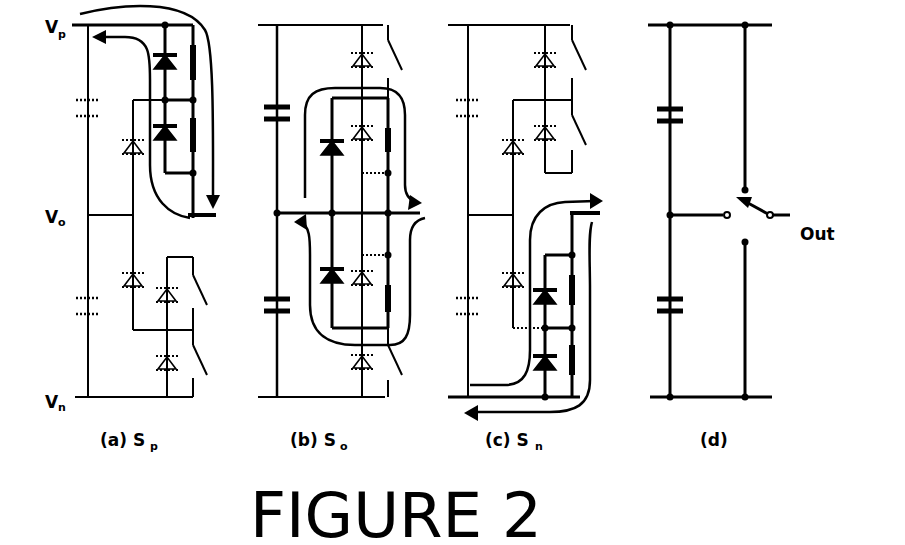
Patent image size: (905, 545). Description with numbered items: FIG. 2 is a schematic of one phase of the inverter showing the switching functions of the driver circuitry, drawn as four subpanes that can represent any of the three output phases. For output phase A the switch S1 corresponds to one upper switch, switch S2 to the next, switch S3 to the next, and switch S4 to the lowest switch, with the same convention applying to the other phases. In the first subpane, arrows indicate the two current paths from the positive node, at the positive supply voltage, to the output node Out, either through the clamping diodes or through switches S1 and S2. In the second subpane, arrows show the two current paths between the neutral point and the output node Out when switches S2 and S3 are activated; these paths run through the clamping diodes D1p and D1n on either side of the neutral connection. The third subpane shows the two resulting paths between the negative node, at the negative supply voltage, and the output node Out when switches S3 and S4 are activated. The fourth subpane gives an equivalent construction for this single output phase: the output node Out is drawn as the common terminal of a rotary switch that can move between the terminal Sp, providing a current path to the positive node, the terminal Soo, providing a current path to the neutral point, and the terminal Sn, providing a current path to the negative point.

The switch S1 is at (212, 62).
The switch S2 is at (309, 139).
The switch S3 is at (499, 293).
The switch S4 is at (571, 362).
The clamping diode D1p is at (318, 168).
The clamping diode D1n is at (318, 269).
The terminal Sp is at (758, 112).
The terminal Sn is at (758, 318).
The terminal Soo is at (700, 209).
The output node Out is at (220, 229).